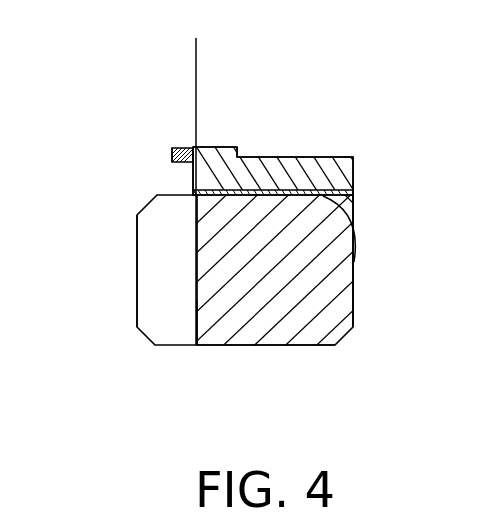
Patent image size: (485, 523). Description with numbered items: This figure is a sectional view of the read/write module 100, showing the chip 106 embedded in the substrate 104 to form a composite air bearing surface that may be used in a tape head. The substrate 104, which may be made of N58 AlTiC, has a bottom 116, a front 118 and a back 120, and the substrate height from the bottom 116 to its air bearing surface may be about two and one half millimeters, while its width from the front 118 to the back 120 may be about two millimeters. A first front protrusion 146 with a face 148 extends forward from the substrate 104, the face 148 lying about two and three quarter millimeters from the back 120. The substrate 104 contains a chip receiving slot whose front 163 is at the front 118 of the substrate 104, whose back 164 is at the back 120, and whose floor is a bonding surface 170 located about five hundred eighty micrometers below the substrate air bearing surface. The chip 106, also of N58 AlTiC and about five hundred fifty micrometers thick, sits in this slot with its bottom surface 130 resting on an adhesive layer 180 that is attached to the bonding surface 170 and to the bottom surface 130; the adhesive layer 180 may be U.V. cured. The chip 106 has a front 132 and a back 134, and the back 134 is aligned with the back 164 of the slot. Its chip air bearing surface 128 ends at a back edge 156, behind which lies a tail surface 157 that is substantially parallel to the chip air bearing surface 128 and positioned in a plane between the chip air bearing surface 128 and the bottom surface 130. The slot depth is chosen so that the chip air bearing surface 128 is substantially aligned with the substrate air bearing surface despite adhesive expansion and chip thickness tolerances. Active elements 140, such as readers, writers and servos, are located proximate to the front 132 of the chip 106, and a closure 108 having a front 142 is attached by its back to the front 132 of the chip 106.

The module 100 is at (84, 401).
The substrate 104 is at (243, 347).
The chip 106 is at (322, 160).
The closure 108 is at (181, 148).
The bottom 116 is at (260, 347).
The front 118 is at (197, 323).
The back 120 is at (353, 303).
The chip air bearing surface 128 is at (217, 147).
The bottom surface 130 is at (354, 170).
The front 132 is at (193, 150).
The back 134 is at (355, 160).
The active elements 140 is at (195, 180).
The front 142 is at (172, 152).
The first front protrusion 146 is at (163, 280).
The face 148 is at (137, 267).
The back edge 156 is at (237, 157).
The tail surface 157 is at (293, 157).
The front 163 is at (195, 196).
The back 164 is at (353, 197).
The bonding surface 170 is at (354, 262).
The adhesive layer 180 is at (353, 195).